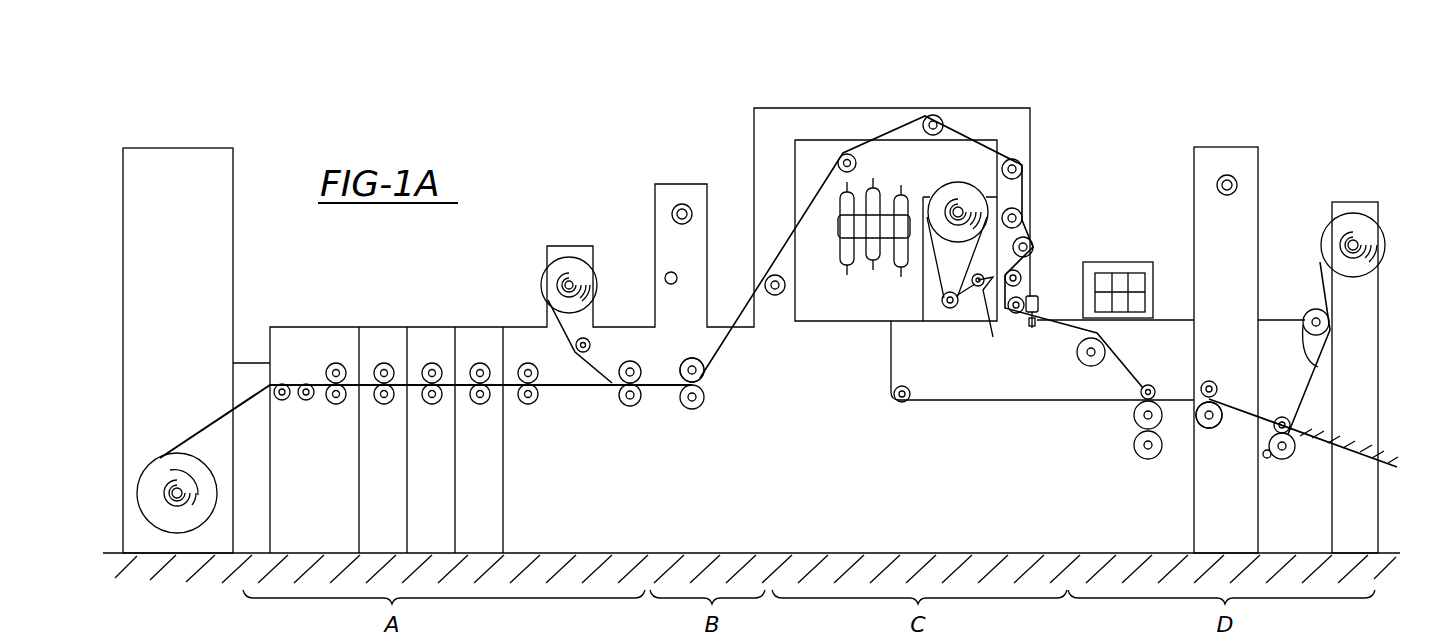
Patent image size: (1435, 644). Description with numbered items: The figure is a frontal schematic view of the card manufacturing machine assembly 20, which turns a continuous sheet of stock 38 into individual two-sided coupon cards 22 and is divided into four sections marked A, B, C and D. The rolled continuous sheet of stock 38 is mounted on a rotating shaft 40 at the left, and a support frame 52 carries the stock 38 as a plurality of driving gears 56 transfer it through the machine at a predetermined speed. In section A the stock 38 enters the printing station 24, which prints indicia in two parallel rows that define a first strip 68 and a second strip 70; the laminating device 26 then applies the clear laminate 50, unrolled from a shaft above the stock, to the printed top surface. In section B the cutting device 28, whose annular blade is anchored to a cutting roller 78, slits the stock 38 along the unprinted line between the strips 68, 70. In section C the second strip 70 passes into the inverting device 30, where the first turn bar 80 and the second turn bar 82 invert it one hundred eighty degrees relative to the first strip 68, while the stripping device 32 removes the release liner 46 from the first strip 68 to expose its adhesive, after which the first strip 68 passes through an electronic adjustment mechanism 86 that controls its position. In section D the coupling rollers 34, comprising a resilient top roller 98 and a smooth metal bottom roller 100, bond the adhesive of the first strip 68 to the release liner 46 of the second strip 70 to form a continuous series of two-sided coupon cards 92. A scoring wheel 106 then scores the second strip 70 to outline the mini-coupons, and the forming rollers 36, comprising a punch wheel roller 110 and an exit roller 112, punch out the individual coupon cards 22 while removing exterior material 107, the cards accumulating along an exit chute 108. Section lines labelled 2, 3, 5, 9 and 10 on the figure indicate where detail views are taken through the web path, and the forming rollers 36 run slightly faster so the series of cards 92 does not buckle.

The section line 2- 2 is at (257, 428).
The section line 3- 3 is at (547, 376).
The section line 5- 5 is at (745, 368).
The section line 9- 9 is at (1165, 430).
The section line 10- 10 is at (1251, 426).
The card manufacturing machine assembly 20 is at (700, 156).
The coupon card 22 is at (1364, 442).
The printing station 24 is at (624, 306).
The laminating device 26 is at (557, 243).
The cutting device 28 is at (712, 412).
The inverting device 30 is at (855, 284).
The stripping device 32 is at (1002, 251).
The coupling rollers 34 is at (1133, 451).
The forming rollers 36 is at (1280, 466).
The continuous sheet of stock 38 is at (160, 458).
The rotating shaft 40 is at (185, 505).
The release liner 46 is at (993, 210).
The laminate 50 is at (590, 338).
The support frame 52 is at (880, 521).
The driving gears 56 is at (1148, 459).
The first strip 68 is at (892, 130).
The second strip 70 is at (876, 225).
The cutting roller 78 is at (703, 380).
The first turn bar 80 is at (838, 205).
The second turn bar 82 is at (912, 205).
The electronic adjustment mechanism 86 is at (1040, 300).
The continuous series of two-sided coupon cards 92 is at (1224, 410).
The top roller 98 is at (1143, 383).
The bottom roller 100 is at (1135, 413).
The scoring wheel 106 is at (1212, 380).
The exterior material 107 is at (1323, 240).
The exit chute 108 is at (1372, 458).
The punch wheel roller 110 is at (1282, 415).
The exit roller 112 is at (1288, 457).